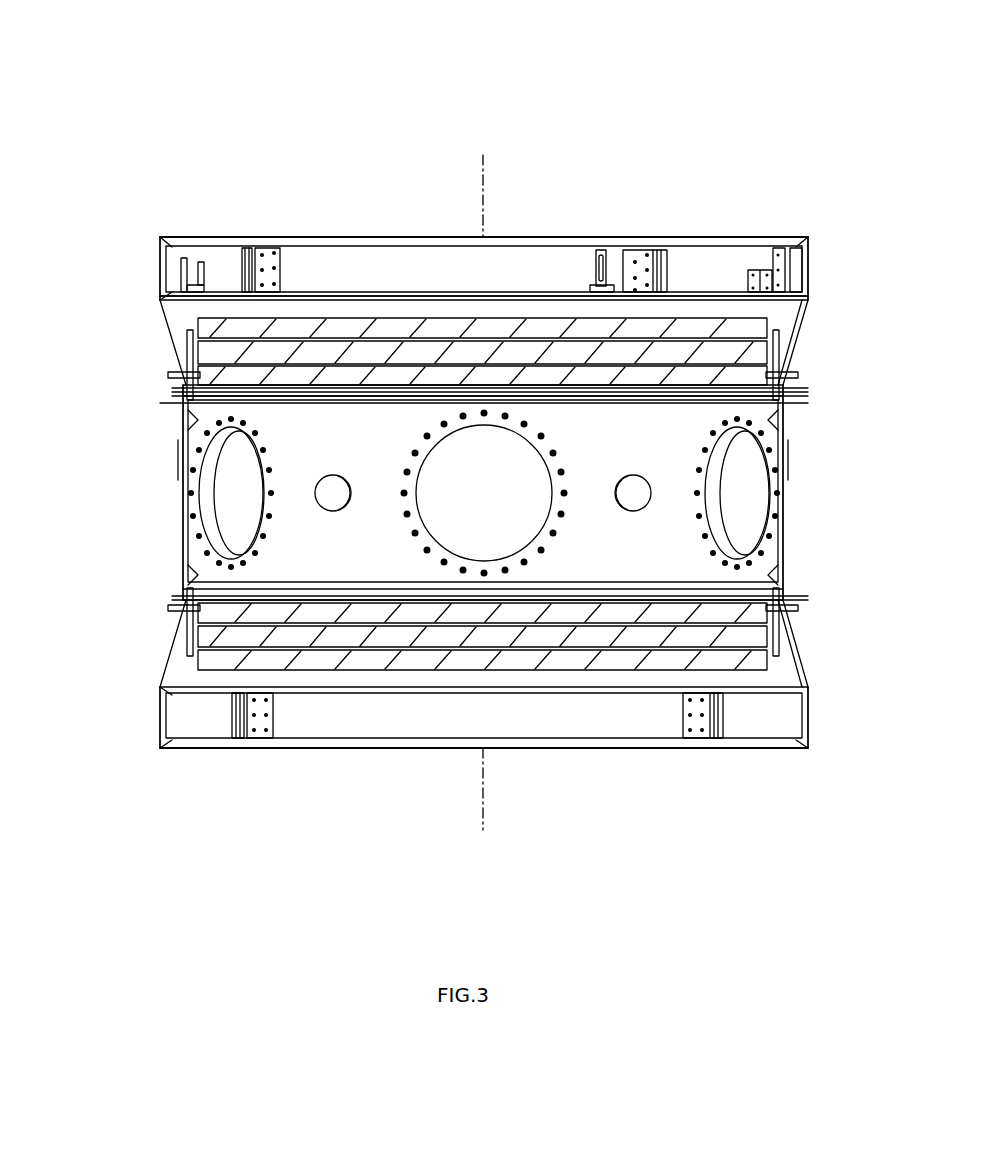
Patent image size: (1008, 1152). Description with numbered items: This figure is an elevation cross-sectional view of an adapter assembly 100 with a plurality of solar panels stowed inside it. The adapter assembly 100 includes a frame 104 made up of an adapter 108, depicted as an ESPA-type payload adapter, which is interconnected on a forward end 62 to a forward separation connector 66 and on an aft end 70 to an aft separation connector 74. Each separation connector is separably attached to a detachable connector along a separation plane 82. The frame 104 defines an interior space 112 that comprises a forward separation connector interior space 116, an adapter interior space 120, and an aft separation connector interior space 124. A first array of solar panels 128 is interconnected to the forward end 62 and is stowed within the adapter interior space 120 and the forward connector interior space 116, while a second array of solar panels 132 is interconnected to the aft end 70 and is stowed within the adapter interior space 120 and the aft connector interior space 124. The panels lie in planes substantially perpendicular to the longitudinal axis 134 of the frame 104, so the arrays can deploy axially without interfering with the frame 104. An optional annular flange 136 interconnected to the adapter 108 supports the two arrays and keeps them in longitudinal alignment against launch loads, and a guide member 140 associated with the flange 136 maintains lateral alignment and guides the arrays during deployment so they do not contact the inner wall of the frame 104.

The adapter assembly 100 is at (746, 90).
The longitudinal axis 134 is at (485, 194).
The interior space 112 is at (607, 235).
The separation plane 82 is at (738, 237).
The forward separation connector interior space 116 is at (480, 284).
The first array of solar panels 128 is at (800, 314).
The forward end 62 is at (800, 385).
The guide member 140 is at (190, 343).
The frame 104 is at (796, 412).
The annular flange 136 is at (184, 421).
The adapter interior space 120 is at (502, 503).
The aft end 70 is at (792, 602).
The second array of solar panels 132 is at (799, 673).
The aft separation connector interior space 124 is at (546, 728).
The forward separation connector 66 is at (76, 232).
The adapter 108 is at (76, 618).
The aft separation connector 74 is at (76, 620).